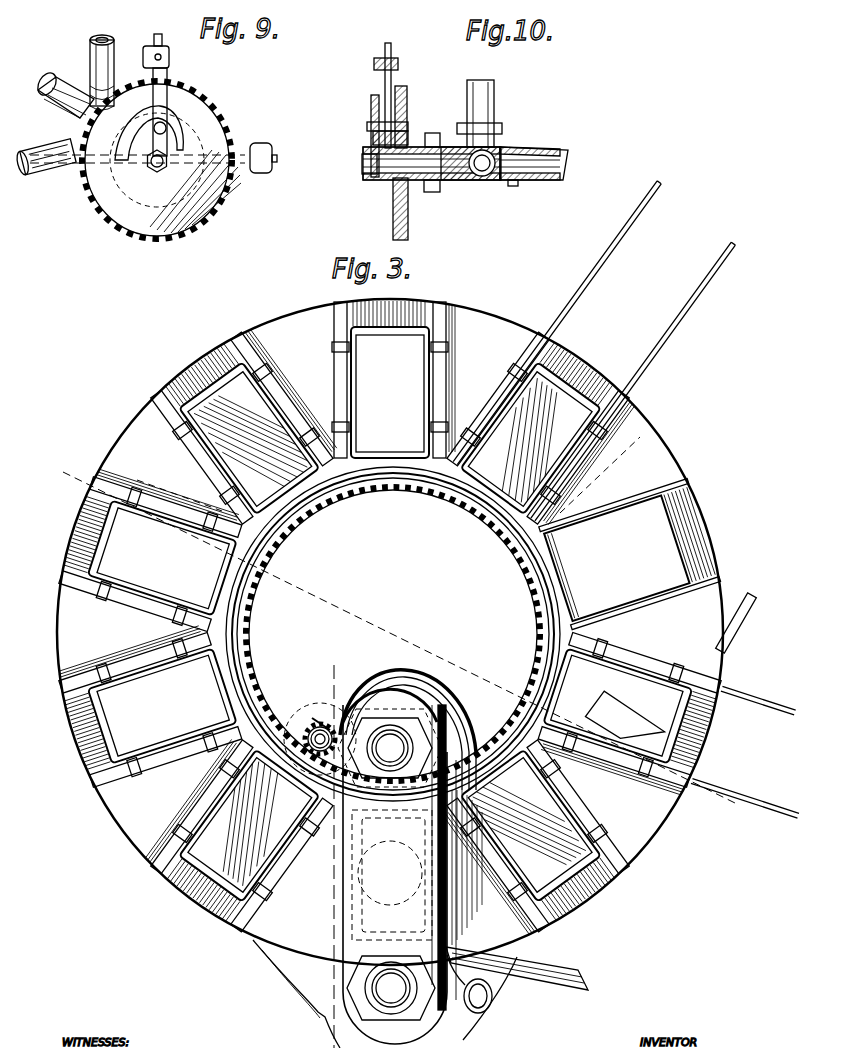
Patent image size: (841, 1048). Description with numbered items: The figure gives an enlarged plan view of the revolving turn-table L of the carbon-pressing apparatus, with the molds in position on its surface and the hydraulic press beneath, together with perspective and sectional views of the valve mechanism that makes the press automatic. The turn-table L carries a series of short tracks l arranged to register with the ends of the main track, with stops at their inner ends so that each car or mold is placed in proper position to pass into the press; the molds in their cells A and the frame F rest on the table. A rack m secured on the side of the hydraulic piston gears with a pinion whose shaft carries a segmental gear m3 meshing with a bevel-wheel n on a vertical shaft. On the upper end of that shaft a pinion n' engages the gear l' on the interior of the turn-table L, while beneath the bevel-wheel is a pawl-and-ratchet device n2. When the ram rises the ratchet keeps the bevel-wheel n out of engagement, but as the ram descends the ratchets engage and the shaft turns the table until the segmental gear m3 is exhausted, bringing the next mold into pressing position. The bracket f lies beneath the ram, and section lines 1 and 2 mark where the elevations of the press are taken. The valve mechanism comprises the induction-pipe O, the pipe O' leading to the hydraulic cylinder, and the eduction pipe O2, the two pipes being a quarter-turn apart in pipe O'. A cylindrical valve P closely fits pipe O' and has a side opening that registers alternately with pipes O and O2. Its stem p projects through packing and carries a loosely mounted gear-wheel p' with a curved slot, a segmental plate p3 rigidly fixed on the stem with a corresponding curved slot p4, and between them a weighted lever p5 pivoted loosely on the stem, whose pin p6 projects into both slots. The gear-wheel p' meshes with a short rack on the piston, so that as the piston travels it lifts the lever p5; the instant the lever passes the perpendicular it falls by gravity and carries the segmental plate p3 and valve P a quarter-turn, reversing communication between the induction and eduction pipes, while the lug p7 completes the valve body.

In FIG. 3, the cell / cup A is at (357, 405).
In FIG. 3, the cell with frame F is at (645, 718).
In FIG. 3, the turn-table L is at (89, 627).
In FIG. 3, the short tracks l is at (451, 633).
In FIG. 3, the gear l' is at (393, 634).
In FIG. 3, the section line 1 1 is at (733, 812).
In FIG. 3, the section line 2 2 is at (331, 846).
In FIG. 3, the bevel-wheel n is at (320, 713).
In FIG. 3, the pinion n' is at (313, 702).
In FIG. 3, the pawl-and-ratchet device n2 is at (300, 714).
In FIG. 3, the rack m is at (385, 876).
In FIG. 3, the segmental gear m3 is at (384, 690).
In FIG. 3, the frame bracket f is at (392, 875).
In FIG. 9, the induction-pipe O is at (113, 66).
In FIG. 10, the induction-pipe O is at (482, 113).
In FIG. 9, the pipe leading to hydraulic cylinder O' is at (64, 89).
In FIG. 10, the pipe leading to hydraulic cylinder O' is at (534, 152).
In FIG. 3, the pipe leading to hydraulic cylinder O' is at (466, 990).
In FIG. 9, the eduction or discharge pipe O2 is at (40, 142).
In FIG. 3, the eduction or discharge pipe O2 is at (518, 968).
In FIG. 9, the valve stem p is at (190, 147).
In FIG. 10, the valve stem p is at (431, 169).
In FIG. 9, the gear-wheel p' is at (161, 160).
In FIG. 10, the gear-wheel p' is at (411, 163).
In FIG. 9, the segmental plate p3 is at (149, 119).
In FIG. 10, the segmental plate p3 is at (371, 109).
In FIG. 9, the curved slot p4 is at (157, 160).
In FIG. 9, the weighted lever p5 is at (168, 73).
In FIG. 10, the weighted lever p5 is at (386, 95).
In FIG. 9, the pin p6 is at (166, 126).
In FIG. 10, the pin p6 is at (407, 126).
In FIG. 10, the lug p7 is at (484, 183).
In FIG. 10, the cylindrical valve P is at (455, 147).